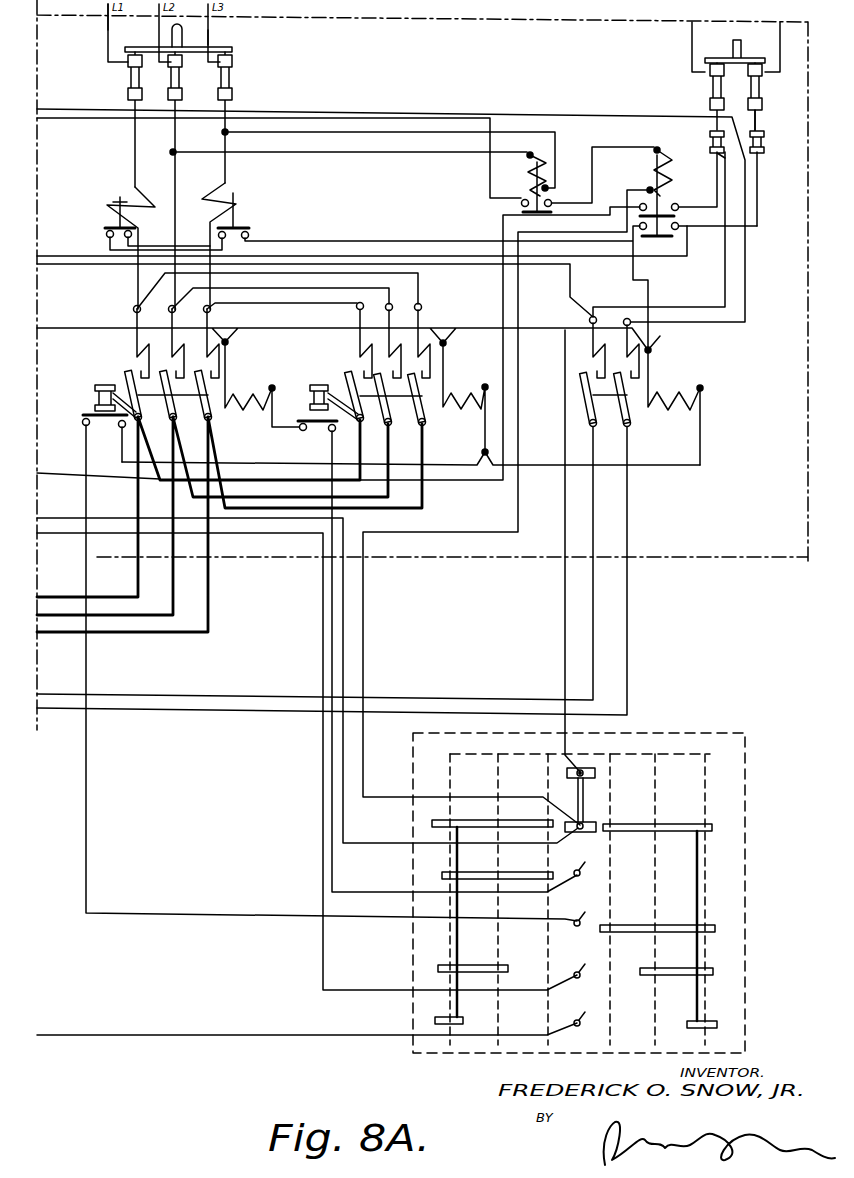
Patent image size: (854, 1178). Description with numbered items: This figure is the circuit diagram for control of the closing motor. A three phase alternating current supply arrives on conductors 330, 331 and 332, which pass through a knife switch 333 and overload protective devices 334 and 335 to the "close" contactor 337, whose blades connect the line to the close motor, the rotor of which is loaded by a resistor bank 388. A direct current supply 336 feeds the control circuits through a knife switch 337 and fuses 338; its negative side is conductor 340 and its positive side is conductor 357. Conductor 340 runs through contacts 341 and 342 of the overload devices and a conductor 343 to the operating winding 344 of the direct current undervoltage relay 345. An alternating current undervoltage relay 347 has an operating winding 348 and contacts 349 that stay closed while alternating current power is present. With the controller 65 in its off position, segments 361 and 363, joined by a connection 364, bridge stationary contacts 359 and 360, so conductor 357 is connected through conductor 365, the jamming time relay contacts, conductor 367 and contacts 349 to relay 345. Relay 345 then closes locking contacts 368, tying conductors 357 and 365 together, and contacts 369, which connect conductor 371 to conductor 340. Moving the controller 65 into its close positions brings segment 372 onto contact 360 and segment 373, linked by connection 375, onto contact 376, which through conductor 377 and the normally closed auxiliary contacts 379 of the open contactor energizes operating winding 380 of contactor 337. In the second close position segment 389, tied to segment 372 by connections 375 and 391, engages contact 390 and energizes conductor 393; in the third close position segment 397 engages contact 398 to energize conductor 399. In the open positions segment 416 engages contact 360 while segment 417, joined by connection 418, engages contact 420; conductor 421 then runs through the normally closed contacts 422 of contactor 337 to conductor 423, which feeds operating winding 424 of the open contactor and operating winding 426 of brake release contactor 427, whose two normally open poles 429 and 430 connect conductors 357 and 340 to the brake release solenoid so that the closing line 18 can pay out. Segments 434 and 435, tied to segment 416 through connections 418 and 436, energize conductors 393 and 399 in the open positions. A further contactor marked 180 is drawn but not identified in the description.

The supply conductor 330 is at (108, 48).
The supply conductor 331 is at (160, 33).
The supply conductor 332 is at (210, 34).
The knife switch 333 is at (234, 52).
The negative conductor 340 is at (100, 109).
The conductor 367 is at (100, 120).
The A. C. undervoltage relay 347 is at (540, 132).
The operating winding 348 is at (527, 160).
The contacts 349 is at (521, 208).
The D. C. undervoltage relay 345 is at (657, 138).
The operating winding 344 is at (652, 160).
The contacts 368 is at (671, 207).
The contacts 369 is at (680, 226).
The conductor 365 is at (552, 236).
The positive conductor 357 is at (76, 263).
The D. C. supply 336 is at (778, 33).
The close contactor 337 is at (706, 60).
The overload protective device 334 is at (134, 199).
The overload protective device 335 is at (238, 205).
The contacts 341 is at (110, 203).
The contacts 342 is at (249, 228).
The conductor 343 is at (336, 241).
The negative conductor 371 is at (68, 320).
The operating winding 380 is at (262, 395).
The closing line 18 is at (359, 346).
The operating winding 424 is at (478, 380).
The conductor 423 is at (492, 438).
The contactor 180 is at (590, 346).
The normally open pole 429 is at (590, 413).
The normally open pole 430 is at (636, 421).
The operating winding 426 is at (702, 405).
The brake release contactor 427 is at (680, 393).
The normally closed contacts 422 is at (84, 424).
The auxiliary contacts 379 is at (303, 431).
The conductor 393 is at (68, 557).
The fuses 338 is at (710, 143).
The resistor bank 388 is at (760, 146).
The controller 65 is at (748, 733).
The stationary contact 359 is at (590, 773).
The segment 361 is at (566, 777).
The connection 364 is at (584, 798).
The stationary contact 360 is at (586, 826).
The segment 363 is at (597, 831).
The segment 372 is at (478, 813).
The connection 375 is at (457, 846).
The segment 373 is at (528, 862).
The stationary contact 376 is at (577, 860).
The segment 416 is at (690, 824).
The connection 418 is at (698, 865).
The conductor 377 is at (388, 893).
The conductor 421 is at (256, 908).
The stationary contact 420 is at (579, 908).
The connection 391 is at (457, 941).
The segment 389 is at (518, 960).
The stationary contact 390 is at (579, 960).
The segment 397 is at (435, 1021).
The stationary contact 398 is at (579, 1008).
The segment 417 is at (682, 925).
The connection 436 is at (698, 946).
The segment 434 is at (714, 977).
The segment 435 is at (718, 1025).
The conductor 399 is at (320, 1036).